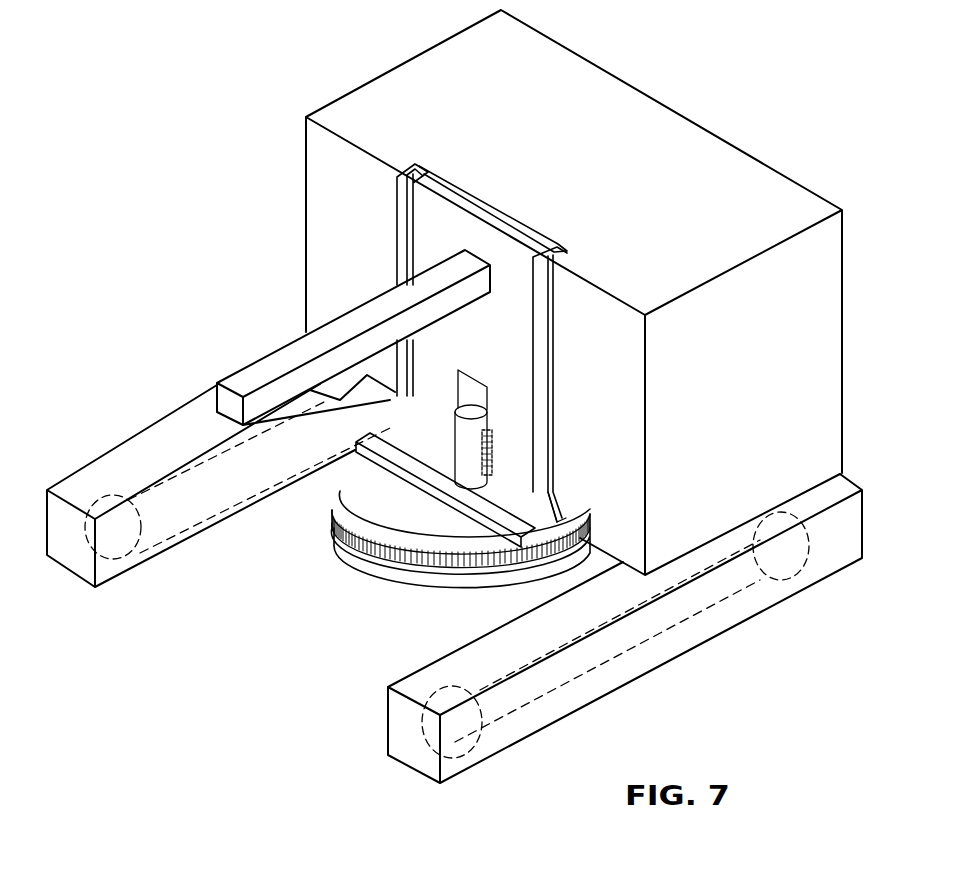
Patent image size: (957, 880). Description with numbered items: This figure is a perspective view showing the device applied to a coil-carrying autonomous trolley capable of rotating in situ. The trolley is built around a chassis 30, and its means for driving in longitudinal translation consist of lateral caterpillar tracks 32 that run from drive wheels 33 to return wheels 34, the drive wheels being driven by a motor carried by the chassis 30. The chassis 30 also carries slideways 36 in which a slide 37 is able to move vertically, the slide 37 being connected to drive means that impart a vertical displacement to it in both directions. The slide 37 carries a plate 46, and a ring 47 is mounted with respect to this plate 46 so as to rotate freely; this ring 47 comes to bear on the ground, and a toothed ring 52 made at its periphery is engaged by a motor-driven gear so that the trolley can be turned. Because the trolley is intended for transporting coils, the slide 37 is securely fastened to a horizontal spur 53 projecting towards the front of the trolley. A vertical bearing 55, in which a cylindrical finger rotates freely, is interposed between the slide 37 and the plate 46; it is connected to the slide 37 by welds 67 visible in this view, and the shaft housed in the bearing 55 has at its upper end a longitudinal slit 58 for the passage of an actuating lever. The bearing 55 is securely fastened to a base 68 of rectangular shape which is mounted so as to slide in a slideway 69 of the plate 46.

The chassis 30 is at (680, 133).
The lateral caterpillar tracks 32 is at (612, 665).
The drive wheels 33 is at (790, 562).
The return wheels 34 is at (468, 727).
The slideways 36 is at (397, 212).
The slide 37 is at (467, 222).
The plate 46 is at (387, 494).
The ring 47 is at (380, 562).
The toothed ring 52 is at (452, 565).
The horizontal spur 53 is at (276, 366).
The vertical bearing 55 is at (490, 440).
The slit 58 is at (476, 398).
The welds 67 is at (492, 458).
The base 68 is at (568, 506).
The slideway 69 is at (453, 485).